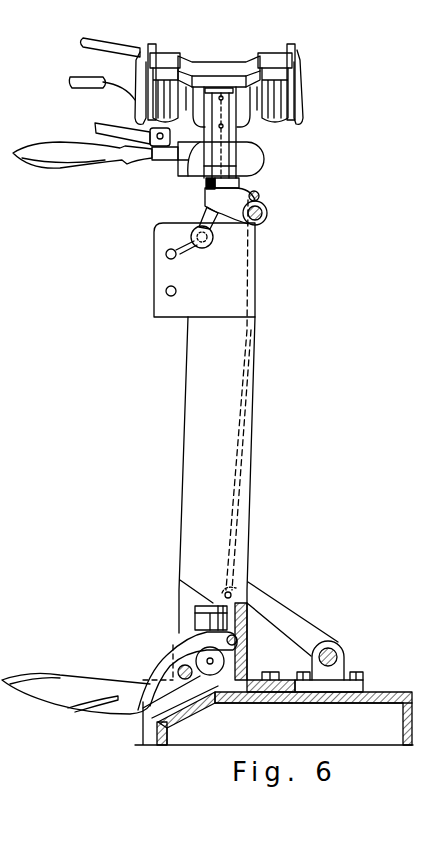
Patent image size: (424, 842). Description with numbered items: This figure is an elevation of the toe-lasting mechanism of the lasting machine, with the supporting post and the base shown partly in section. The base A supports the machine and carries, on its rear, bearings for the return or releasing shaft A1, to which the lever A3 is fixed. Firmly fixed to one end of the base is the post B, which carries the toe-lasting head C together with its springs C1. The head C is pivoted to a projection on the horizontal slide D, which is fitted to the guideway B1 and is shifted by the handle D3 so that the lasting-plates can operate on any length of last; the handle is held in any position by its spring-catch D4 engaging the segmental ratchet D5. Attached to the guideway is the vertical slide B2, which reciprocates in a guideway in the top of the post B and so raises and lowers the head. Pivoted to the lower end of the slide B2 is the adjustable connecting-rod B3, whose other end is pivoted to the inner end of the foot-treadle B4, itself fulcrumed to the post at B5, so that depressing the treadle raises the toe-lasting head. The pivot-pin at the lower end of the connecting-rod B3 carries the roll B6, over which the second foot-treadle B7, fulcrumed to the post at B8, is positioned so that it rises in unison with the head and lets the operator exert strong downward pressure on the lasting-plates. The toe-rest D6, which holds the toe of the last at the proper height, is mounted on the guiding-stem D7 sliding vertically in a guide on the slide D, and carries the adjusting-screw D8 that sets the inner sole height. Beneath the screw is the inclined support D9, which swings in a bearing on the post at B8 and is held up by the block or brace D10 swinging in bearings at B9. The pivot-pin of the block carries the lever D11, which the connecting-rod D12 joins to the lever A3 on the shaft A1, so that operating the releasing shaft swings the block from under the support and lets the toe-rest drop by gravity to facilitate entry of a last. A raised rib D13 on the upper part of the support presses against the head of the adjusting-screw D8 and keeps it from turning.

The toe-lasting head C is at (219, 83).
The springs C1 is at (202, 76).
The spring-catch D4 is at (118, 90).
The toe-rest D6 is at (224, 98).
The handle D3 is at (82, 146).
The segmental ratchet D5 is at (158, 161).
The guideway B1 is at (265, 157).
The guiding-stem D7 is at (265, 172).
The horizontal slide D is at (200, 172).
The adjusting-screw D8 is at (206, 182).
The vertical slide B2 is at (240, 184).
The raised rib D13 is at (210, 198).
The lever D11 is at (260, 199).
The fulcrum / bearing on post B8 is at (268, 222).
The block or brace D10 is at (204, 212).
The support D9 is at (226, 241).
The bearings on post B9 is at (155, 234).
The post B is at (217, 498).
The connecting-rod D12 is at (250, 397).
The adjustable connecting-rod B3 is at (195, 615).
The lever A3 is at (300, 625).
The return or releasing shaft A1 is at (340, 658).
The base A is at (274, 718).
The foot-treadle B4 is at (76, 683).
The foot-treadle B7 is at (118, 707).
The roll B6 is at (211, 665).
The fulcrum on post B5 is at (185, 680).